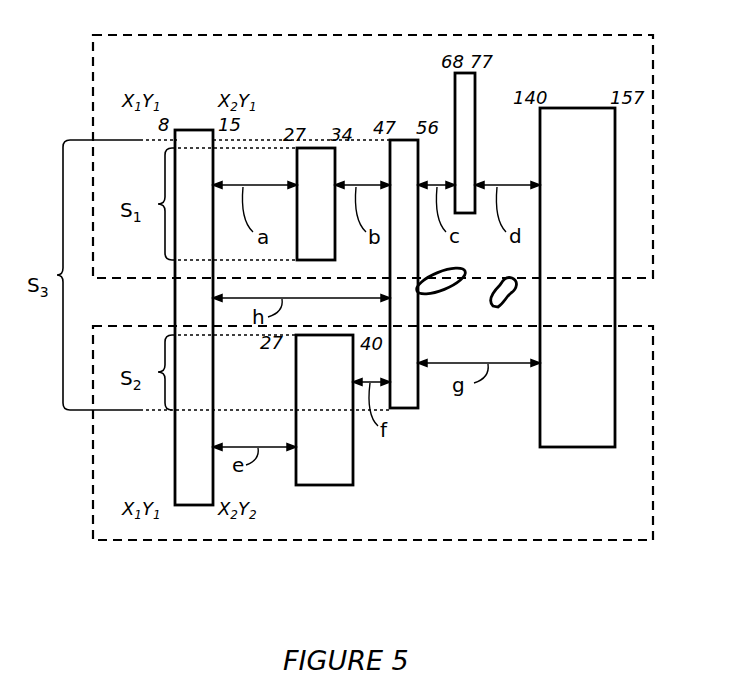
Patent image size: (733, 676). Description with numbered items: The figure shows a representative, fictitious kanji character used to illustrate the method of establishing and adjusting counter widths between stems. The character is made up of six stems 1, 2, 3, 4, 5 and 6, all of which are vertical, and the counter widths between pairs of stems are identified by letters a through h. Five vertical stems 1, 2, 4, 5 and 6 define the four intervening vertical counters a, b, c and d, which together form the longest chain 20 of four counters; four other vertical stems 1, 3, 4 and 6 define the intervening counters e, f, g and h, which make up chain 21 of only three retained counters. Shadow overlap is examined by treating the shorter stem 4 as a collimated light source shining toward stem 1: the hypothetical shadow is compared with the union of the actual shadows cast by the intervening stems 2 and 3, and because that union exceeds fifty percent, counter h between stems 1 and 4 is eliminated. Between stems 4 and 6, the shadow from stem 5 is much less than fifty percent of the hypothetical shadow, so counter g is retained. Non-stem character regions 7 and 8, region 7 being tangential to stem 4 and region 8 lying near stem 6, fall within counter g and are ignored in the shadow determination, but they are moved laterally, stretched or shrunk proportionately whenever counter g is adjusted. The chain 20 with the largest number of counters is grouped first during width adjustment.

The stem 1 is at (194, 317).
The stem 2 is at (316, 204).
The stem 3 is at (324, 410).
The stem 4 is at (404, 274).
The stem 5 is at (465, 143).
The stem 6 is at (577, 277).
The character region 7 is at (458, 266).
The character region 8 is at (493, 303).
The chain 20 is at (653, 142).
The chain 21 is at (653, 398).